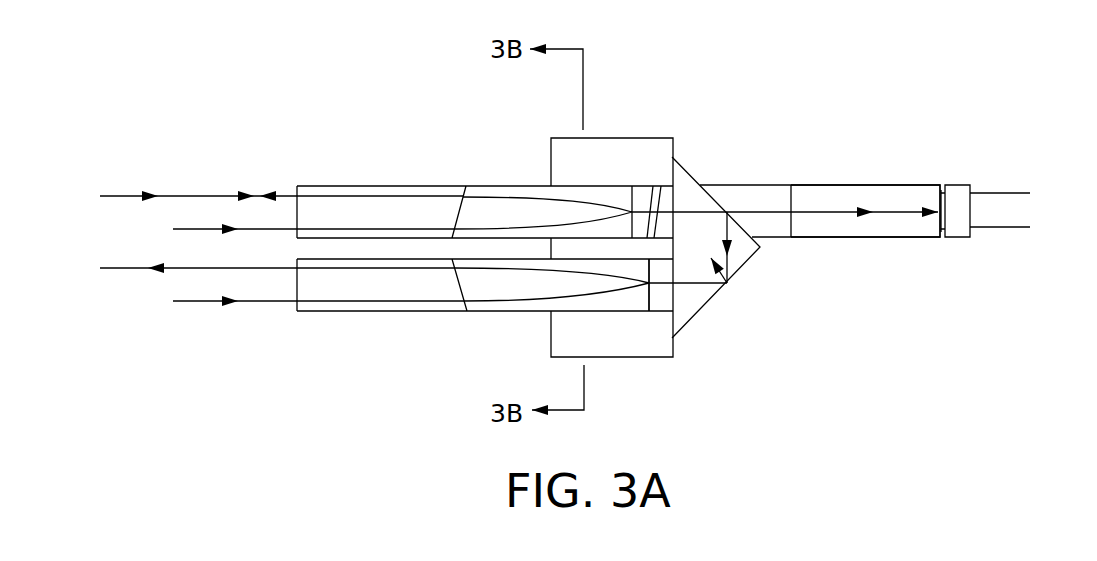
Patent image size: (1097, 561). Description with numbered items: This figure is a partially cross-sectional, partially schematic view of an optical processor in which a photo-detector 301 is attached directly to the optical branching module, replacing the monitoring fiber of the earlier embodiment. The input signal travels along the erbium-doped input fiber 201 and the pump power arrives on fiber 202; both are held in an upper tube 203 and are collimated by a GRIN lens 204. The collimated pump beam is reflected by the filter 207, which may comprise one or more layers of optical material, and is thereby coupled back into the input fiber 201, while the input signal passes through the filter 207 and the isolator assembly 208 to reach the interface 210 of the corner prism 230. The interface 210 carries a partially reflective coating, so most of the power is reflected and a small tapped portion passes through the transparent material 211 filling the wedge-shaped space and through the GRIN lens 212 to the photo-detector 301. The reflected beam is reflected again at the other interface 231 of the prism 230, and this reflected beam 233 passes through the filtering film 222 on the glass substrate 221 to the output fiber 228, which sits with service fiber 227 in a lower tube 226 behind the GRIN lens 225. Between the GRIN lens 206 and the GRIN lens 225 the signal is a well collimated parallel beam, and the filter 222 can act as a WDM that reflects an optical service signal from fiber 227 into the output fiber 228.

The input fiber 201 is at (196, 196).
The fiber 202 is at (287, 229).
The capillary 203 is at (388, 186).
The GRIN lens 204 is at (500, 186).
The GRIN lens 206 is at (570, 137).
The filter 207 is at (652, 186).
The isolator assembly 208 is at (660, 186).
The interface 210 is at (695, 180).
The transparent material 211 is at (768, 185).
The GRIN lens 212 is at (870, 185).
The glass substrate 221 is at (662, 316).
The filtering film 222 is at (650, 312).
The GRIN lens 225 is at (498, 312).
The capillary 226 is at (378, 312).
The fiber 227 is at (285, 301).
The output fiber 228 is at (195, 268).
The corner prism 230 is at (731, 291).
The interface 231 is at (742, 268).
The reflected beam 233 is at (690, 283).
The photo-detector 301 is at (960, 162).